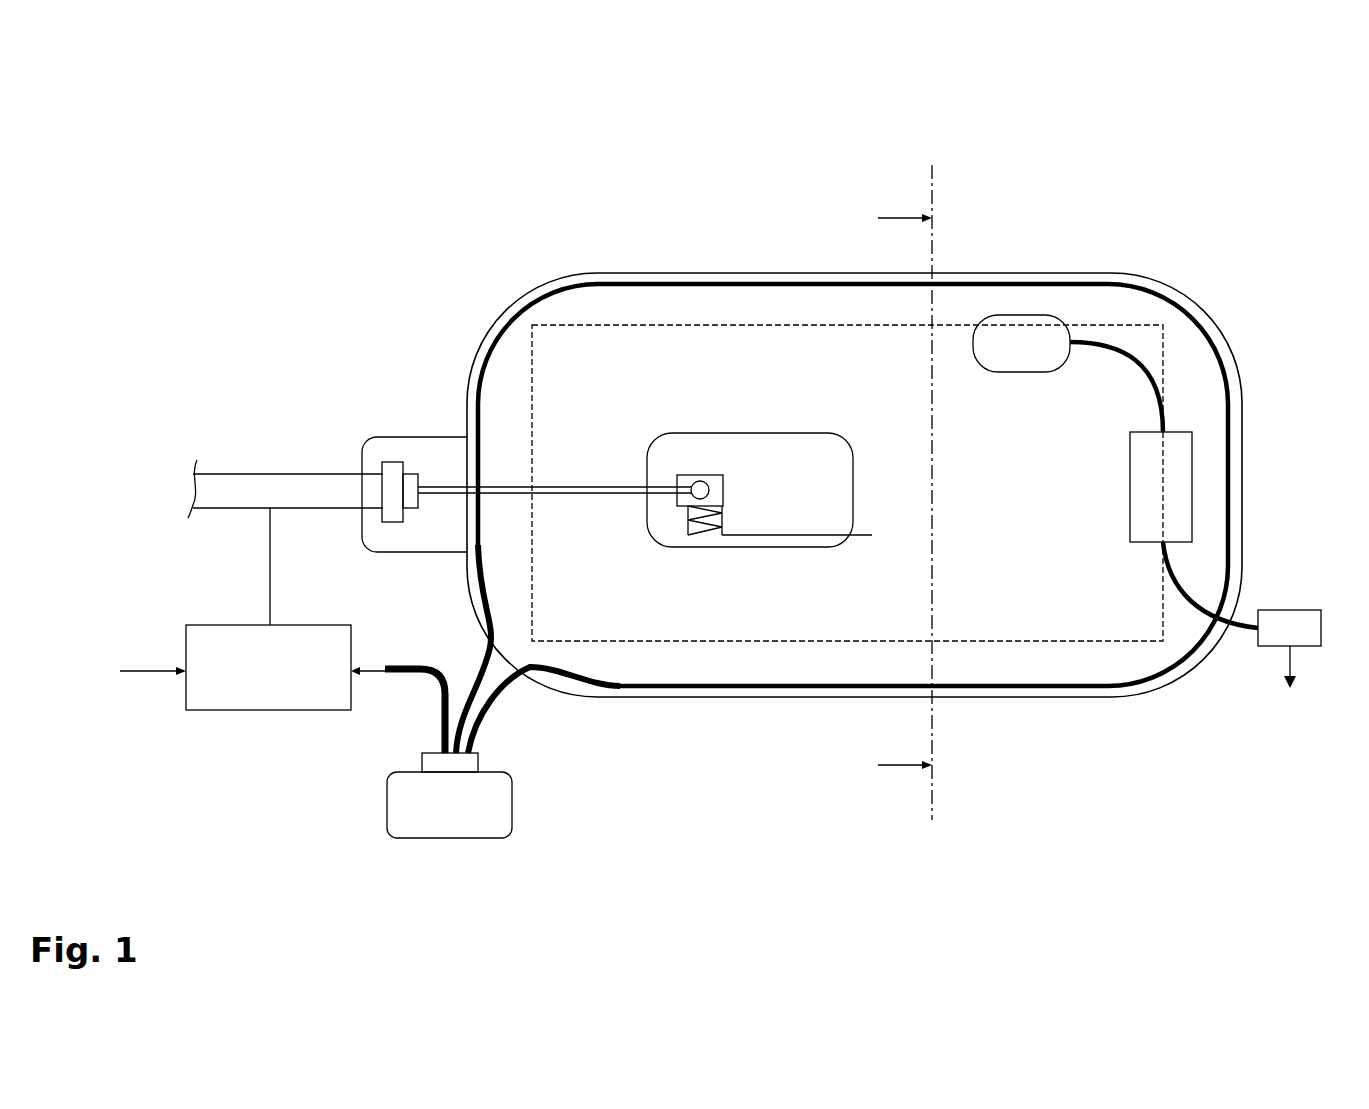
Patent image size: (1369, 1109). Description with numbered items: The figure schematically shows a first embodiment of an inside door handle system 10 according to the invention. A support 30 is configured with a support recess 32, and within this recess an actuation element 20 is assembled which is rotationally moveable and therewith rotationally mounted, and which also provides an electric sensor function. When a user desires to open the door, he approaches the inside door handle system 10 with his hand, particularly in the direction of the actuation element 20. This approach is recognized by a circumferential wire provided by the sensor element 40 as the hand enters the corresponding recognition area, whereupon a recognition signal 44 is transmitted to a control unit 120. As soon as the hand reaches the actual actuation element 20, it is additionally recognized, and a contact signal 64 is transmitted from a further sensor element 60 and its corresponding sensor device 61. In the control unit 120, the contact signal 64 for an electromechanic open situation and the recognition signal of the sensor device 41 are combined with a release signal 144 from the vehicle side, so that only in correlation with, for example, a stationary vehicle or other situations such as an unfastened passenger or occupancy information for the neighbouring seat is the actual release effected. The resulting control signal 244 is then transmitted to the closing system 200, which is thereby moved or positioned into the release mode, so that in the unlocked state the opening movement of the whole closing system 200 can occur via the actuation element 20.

The inside door handle system 10 is at (550, 160).
The actuation element 20 is at (816, 433).
The support 30 is at (1210, 320).
The support recess 32 is at (683, 305).
The sensor element 40 is at (768, 698).
The sensor device 41 is at (497, 812).
The recognition signal 44 is at (885, 325).
The sensor element 60 is at (1035, 323).
The sensor device 61 is at (1297, 610).
The contact signal 64 is at (1297, 675).
The control unit 120 is at (282, 710).
The release signal 144 is at (156, 652).
The closing system 200 is at (365, 395).
The control signal 244 is at (270, 597).